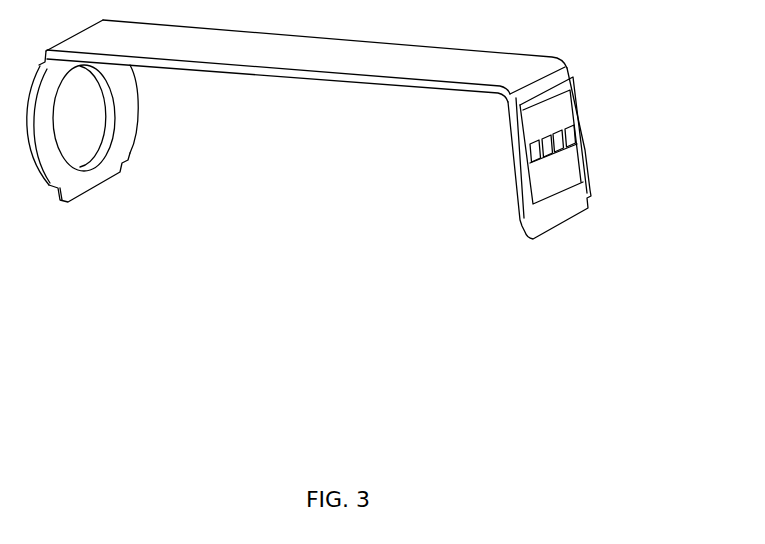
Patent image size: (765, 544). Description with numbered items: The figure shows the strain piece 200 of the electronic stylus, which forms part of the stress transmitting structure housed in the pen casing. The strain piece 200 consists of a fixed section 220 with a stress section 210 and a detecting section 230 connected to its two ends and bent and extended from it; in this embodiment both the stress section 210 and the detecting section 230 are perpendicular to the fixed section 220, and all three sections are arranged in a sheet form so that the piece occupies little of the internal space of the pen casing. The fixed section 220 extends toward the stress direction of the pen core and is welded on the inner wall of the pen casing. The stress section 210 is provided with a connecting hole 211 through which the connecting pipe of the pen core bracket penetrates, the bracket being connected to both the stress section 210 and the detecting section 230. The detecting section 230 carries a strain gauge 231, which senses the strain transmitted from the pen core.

The strain piece 200 is at (321, 189).
The stress section 210 is at (114, 177).
The connecting hole 211 is at (70, 152).
The fixed section 220 is at (295, 53).
The detecting section 230 is at (522, 151).
The strain gauge 231 is at (568, 123).